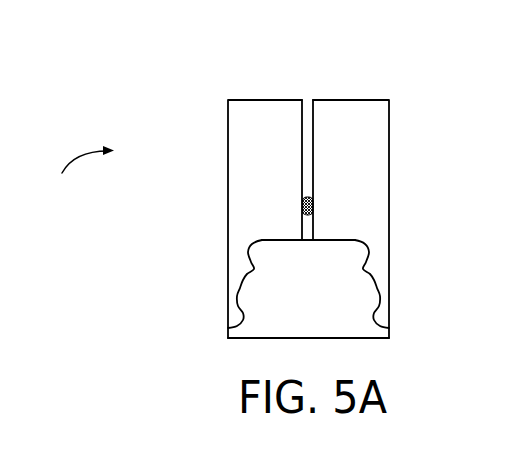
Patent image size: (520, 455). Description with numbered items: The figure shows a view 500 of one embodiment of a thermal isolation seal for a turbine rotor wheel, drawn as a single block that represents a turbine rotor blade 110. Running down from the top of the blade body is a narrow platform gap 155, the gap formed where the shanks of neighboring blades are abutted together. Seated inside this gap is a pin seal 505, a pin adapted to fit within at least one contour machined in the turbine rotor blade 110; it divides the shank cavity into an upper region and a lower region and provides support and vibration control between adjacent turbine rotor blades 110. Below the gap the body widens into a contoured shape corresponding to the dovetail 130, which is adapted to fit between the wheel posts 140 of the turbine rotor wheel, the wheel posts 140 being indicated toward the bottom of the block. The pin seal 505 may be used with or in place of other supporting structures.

The view 500 is at (80, 173).
The turbine rotor blade 110 is at (260, 100).
The platform gap 155 is at (307, 98).
The pin seal 505 is at (314, 205).
The dovetail 130 is at (240, 285).
The wheel post 140 is at (295, 328).